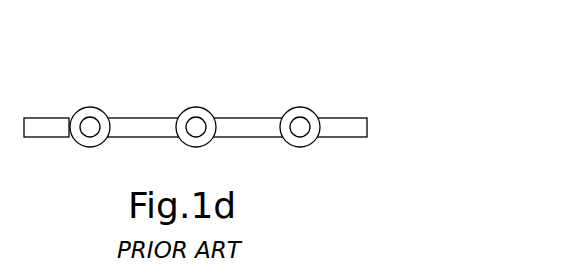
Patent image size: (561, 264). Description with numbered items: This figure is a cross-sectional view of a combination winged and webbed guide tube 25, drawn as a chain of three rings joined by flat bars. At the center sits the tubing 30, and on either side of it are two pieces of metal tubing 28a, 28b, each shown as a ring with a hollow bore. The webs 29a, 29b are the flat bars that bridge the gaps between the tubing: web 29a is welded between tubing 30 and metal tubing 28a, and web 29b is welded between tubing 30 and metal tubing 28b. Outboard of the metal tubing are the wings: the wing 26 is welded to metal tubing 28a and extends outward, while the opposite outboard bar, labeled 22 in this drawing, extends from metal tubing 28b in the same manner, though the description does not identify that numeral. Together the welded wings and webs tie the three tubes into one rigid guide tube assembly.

The end link 22 is at (32, 117).
The metal tubing 28b is at (89, 107).
The web 29b is at (135, 118).
The tubing 30 is at (177, 107).
The combination winged and webbed guide tube 25 is at (228, 102).
The web 29a is at (258, 118).
The metal tubing 28a is at (305, 107).
The wing 26 is at (350, 118).